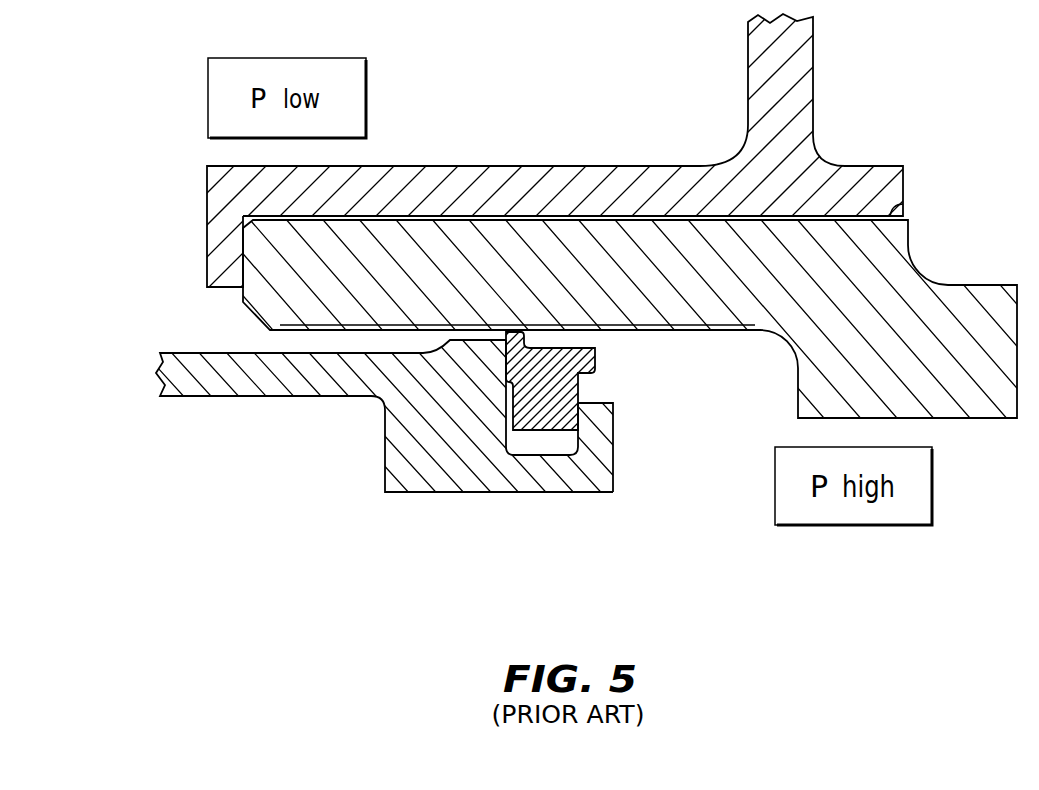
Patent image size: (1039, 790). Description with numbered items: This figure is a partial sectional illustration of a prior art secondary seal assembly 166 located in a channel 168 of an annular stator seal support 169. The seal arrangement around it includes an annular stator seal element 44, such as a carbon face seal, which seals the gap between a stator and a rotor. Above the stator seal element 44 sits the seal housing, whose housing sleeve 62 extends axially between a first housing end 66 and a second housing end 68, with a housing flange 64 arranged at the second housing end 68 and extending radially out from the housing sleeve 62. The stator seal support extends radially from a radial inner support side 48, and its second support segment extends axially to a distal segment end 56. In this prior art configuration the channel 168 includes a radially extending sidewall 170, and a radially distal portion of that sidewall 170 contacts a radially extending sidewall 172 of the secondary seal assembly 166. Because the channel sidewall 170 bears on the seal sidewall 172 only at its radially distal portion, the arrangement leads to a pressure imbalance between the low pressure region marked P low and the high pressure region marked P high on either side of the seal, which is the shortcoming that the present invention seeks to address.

The annular stator seal element 44 is at (990, 410).
The radial inner support side 48 is at (430, 492).
The distal segment end 56 is at (613, 467).
The housing sleeve 62 is at (392, 166).
The housing flange 64 is at (748, 124).
The first housing end 66 is at (207, 240).
The second housing end 68 is at (903, 204).
The secondary seal assembly 166 is at (568, 348).
The channel 168 is at (560, 447).
The annular stator seal support 169 is at (283, 396).
The radially extending sidewall 170 is at (526, 455).
The radially extending sidewall 172 is at (478, 340).